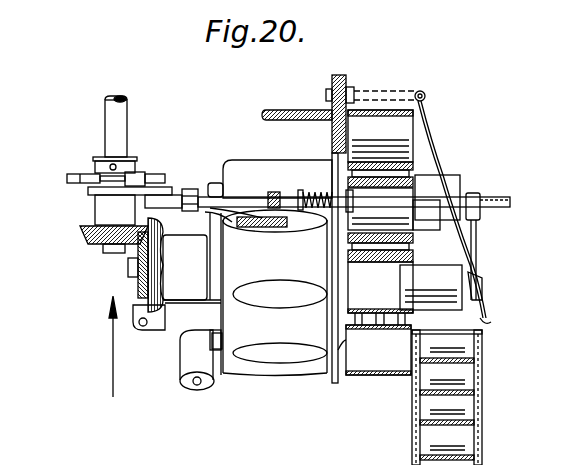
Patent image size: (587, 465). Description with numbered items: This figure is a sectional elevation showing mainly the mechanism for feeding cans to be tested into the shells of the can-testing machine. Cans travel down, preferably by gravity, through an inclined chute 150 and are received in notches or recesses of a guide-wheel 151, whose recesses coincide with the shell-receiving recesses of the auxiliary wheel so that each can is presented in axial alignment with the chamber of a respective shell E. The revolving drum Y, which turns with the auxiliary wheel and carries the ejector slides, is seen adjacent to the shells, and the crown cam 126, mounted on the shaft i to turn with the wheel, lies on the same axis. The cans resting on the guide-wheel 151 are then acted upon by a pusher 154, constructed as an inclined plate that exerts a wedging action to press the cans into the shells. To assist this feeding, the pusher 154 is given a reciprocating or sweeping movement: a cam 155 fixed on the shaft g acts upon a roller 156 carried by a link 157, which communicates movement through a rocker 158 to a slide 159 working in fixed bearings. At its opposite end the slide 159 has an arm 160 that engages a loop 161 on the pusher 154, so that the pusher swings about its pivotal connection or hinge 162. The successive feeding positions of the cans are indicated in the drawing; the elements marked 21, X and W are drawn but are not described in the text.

The shaft g is at (126, 121).
The cam 155 is at (68, 180).
The roller 156 is at (140, 172).
The link 157 is at (84, 196).
The rocker 158 is at (152, 200).
The crown cam 126 is at (160, 252).
The shaft i is at (126, 268).
The direction arrow 21 is at (112, 340).
The pivotal connection or hinge 162 is at (427, 95).
The shell E is at (380, 110).
The electromagnet X is at (380, 136).
The guide-wheel 151 is at (456, 176).
The slide 159 is at (493, 196).
The pusher 154 is at (464, 244).
The arm 160 is at (477, 258).
The loop 161 is at (481, 290).
The inclined chute 150 is at (483, 386).
The drum Y is at (266, 292).
The roller W is at (210, 382).